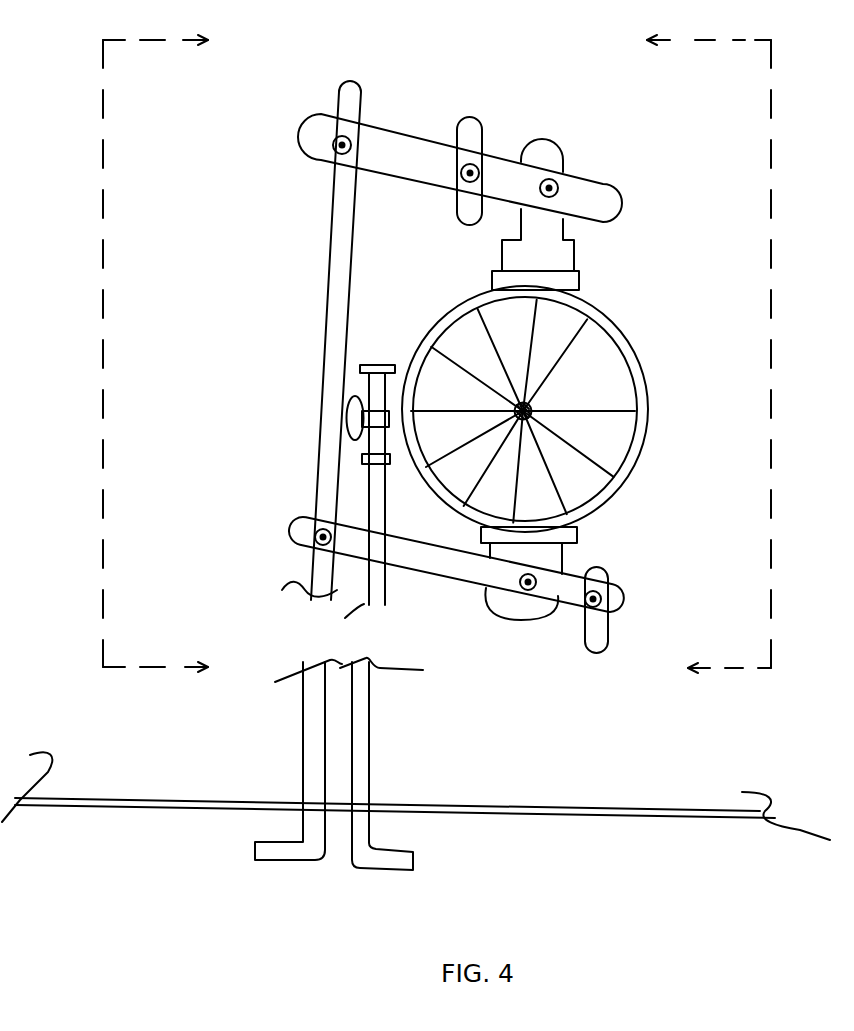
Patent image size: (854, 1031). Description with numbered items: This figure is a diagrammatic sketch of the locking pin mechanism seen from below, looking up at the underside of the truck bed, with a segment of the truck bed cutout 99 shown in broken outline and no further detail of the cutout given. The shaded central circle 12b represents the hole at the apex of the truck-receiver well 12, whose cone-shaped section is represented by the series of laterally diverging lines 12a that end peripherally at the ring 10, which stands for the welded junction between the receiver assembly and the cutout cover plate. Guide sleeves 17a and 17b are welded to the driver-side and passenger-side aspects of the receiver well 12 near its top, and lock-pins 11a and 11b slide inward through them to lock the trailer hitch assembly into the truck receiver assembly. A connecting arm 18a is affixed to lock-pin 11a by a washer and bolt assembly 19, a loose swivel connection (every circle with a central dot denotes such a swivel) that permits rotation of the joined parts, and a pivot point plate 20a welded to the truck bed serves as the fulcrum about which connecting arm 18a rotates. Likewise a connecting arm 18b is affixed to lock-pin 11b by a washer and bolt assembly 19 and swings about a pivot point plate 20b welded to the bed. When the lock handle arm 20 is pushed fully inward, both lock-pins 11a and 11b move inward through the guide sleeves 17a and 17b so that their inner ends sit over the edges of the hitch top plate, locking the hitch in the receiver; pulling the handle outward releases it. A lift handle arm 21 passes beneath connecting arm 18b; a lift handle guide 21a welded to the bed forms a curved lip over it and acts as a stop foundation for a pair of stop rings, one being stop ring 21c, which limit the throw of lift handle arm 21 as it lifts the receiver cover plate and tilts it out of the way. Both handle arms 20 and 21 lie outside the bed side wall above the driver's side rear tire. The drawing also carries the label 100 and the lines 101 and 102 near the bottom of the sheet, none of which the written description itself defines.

The exercise apparatus 100 is at (487, 62).
The truck bed cutout 99 is at (436, 354).
The ring 10 is at (619, 467).
The truck-receiver well 12 is at (605, 438).
The laterally diverging lines 12a is at (528, 328).
The hole at the apex of the truck-receiver well 12b is at (386, 362).
The lock-pin 11a is at (574, 256).
The lock-pin 11b is at (548, 621).
The guide sleeve 17a is at (579, 287).
The guide sleeve 17b is at (612, 604).
The connecting arm 18a is at (604, 202).
The connecting arm 18b is at (303, 534).
The washer and bolt assembly 19 is at (461, 172).
The lock handle arm 20 is at (330, 189).
The pivot point plate 20a is at (477, 132).
The pivot point plate 20b is at (584, 638).
The lift handle arm 21 is at (363, 762).
The lift handle guide 21a is at (357, 419).
The stop ring 21c is at (362, 463).
The ground surface 101 is at (515, 808).
The floor 102 is at (537, 879).